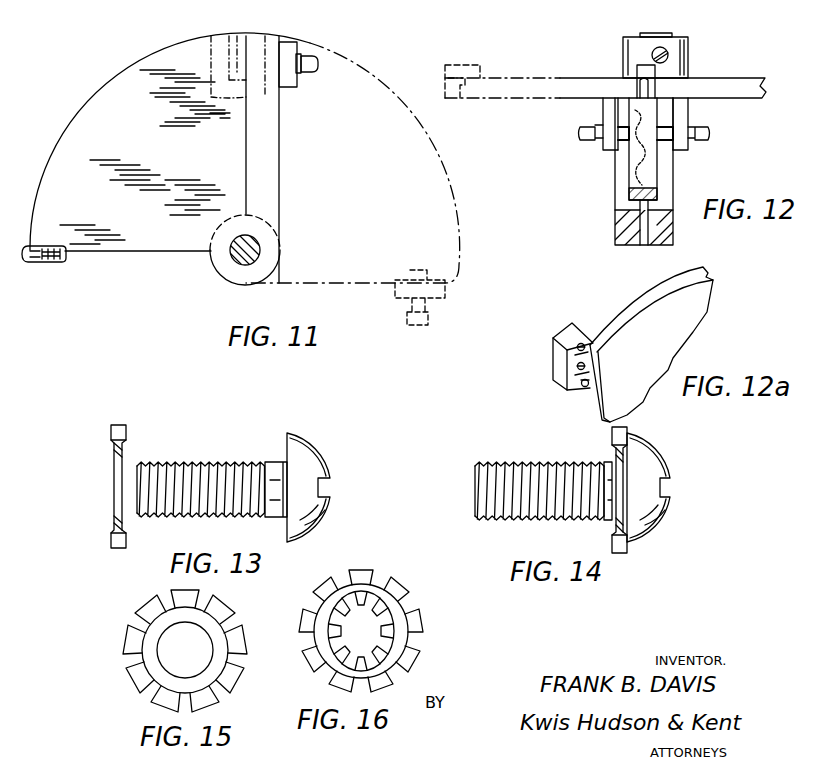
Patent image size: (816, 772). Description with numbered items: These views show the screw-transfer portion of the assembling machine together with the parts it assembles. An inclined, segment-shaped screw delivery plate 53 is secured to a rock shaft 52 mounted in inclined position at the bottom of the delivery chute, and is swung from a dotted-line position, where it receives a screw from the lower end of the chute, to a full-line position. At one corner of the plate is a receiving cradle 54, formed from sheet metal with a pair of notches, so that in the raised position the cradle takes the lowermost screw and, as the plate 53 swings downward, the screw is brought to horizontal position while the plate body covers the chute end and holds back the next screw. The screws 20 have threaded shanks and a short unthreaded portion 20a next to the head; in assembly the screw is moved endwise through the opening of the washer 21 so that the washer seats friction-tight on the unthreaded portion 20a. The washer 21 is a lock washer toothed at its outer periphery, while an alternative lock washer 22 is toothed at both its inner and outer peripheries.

In FIG. 13, the screw 20 is at (211, 462).
In FIG. 14, the screw 20 is at (520, 512).
In FIG. 13, the unthreaded portion 20a is at (275, 462).
In FIG. 14, the unthreaded portion 20a is at (608, 462).
In FIG. 13, the washer 21 is at (117, 446).
In FIG. 14, the washer 21 is at (620, 553).
In FIG. 15, the washer 21 is at (150, 628).
In FIG. 16, the lock washer 22 is at (398, 612).
In FIG. 11, the rock shaft 52 is at (262, 250).
In FIG. 12, the rock shaft 52 is at (672, 33).
In FIG. 11, the screw delivery plate 53 is at (146, 243).
In FIG. 12, the screw delivery plate 53 is at (723, 80).
In FIG. 12A, the screw delivery plate 53 is at (720, 304).
In FIG. 11, the receiving cradle 54 is at (48, 264).
In FIG. 12A, the receiving cradle 54 is at (584, 340).